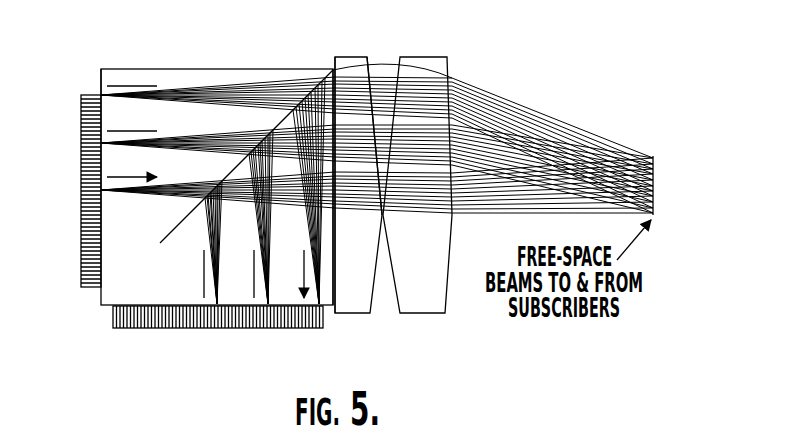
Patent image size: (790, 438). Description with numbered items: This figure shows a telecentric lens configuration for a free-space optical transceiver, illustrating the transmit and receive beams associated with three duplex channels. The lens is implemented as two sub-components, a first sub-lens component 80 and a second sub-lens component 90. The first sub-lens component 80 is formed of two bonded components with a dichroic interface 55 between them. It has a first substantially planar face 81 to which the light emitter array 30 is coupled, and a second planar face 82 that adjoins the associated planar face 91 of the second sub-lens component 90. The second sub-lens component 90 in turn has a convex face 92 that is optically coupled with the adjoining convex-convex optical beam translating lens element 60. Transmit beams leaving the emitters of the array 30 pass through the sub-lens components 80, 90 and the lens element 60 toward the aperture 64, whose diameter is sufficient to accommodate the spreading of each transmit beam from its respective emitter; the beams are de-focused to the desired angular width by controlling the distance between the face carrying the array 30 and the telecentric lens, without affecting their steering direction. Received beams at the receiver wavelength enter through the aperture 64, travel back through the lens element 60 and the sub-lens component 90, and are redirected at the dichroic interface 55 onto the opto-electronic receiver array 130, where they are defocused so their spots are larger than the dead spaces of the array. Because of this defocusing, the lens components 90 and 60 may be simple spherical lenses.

The light emitter array 30 is at (82, 288).
The dichroic interface 55 is at (175, 233).
The optical beam translating lens element 60 is at (430, 57).
The aperture 64 is at (628, 142).
The first sub-lens component 80 is at (199, 75).
The first substantially planar face 81 is at (101, 80).
The second planar face 82 is at (335, 277).
The second sub-lens component 90 is at (351, 57).
The planar face 91 is at (333, 72).
The convex face 92 is at (372, 58).
The opto-electronic receiver array 130 is at (313, 329).